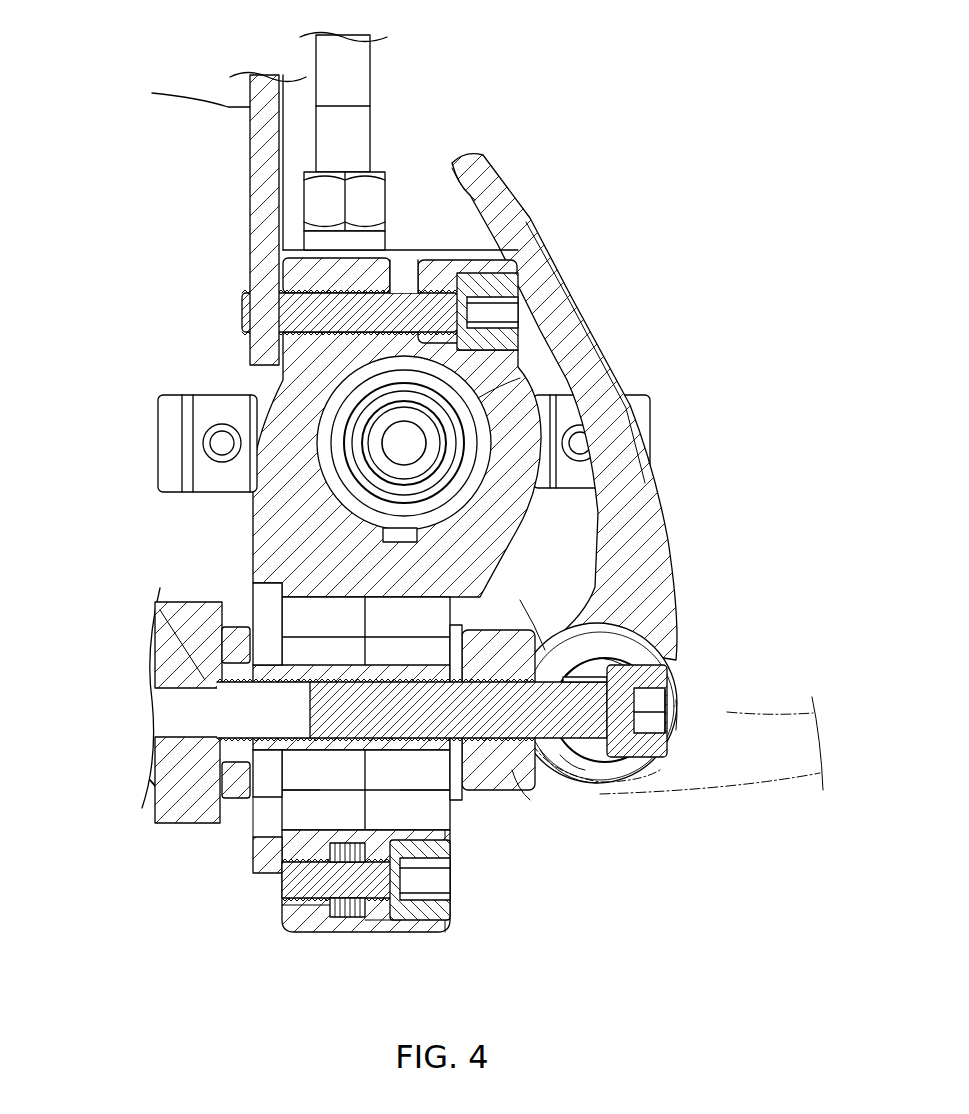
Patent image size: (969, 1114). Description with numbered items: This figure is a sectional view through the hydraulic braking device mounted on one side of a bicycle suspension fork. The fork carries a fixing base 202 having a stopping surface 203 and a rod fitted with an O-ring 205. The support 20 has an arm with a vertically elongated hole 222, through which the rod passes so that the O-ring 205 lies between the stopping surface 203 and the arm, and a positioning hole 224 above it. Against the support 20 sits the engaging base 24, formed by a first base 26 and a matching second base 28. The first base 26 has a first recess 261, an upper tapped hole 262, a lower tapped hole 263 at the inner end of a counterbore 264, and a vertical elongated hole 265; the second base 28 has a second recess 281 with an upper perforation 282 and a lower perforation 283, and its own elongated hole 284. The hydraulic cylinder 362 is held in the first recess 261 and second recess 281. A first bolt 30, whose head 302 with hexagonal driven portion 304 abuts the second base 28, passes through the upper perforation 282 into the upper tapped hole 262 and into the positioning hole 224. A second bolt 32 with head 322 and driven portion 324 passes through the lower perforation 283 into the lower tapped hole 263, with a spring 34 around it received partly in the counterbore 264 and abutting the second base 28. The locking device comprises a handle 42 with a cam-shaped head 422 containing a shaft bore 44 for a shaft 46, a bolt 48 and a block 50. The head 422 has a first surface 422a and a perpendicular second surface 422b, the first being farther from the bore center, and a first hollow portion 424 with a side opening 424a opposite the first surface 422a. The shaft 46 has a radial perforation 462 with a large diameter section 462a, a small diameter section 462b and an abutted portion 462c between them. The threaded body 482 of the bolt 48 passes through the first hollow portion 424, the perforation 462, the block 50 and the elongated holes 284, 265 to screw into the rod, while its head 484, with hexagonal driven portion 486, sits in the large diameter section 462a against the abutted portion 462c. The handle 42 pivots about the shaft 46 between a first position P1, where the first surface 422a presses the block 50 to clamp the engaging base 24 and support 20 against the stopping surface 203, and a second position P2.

The support 20 is at (184, 446).
The engaging base 24 is at (430, 240).
The first base 26 is at (297, 931).
The second base 28 is at (443, 928).
The first bolt 30 is at (398, 272).
The second bolt 32 is at (300, 884).
The spring 34 is at (337, 917).
The handle 42 is at (643, 552).
The shaft bore 44 is at (588, 767).
The shaft 46 is at (583, 670).
The bolt 48 is at (547, 712).
The block 50 is at (512, 640).
The fixing base 202 is at (160, 600).
The stopping surface 203 is at (173, 610).
The O-ring 205 is at (237, 630).
The elongated hole 222 is at (250, 827).
The positioning hole 224 is at (290, 293).
The first recess 261 is at (313, 393).
The upper tapped hole 262 is at (279, 262).
The lower tapped hole 263 is at (290, 903).
The counterbore 264 is at (345, 917).
The elongated hole 265 is at (297, 805).
The second recess 281 is at (495, 395).
The upper perforation 282 is at (440, 280).
The lower perforation 283 is at (372, 917).
The elongated hole 284 is at (420, 810).
The head 302 is at (492, 283).
The driven portion 304 is at (495, 310).
The head 322 is at (437, 852).
The driven portion 324 is at (427, 882).
The hydraulic cylinder 362 is at (317, 450).
The head 422 is at (550, 645).
The first surface 422a is at (512, 772).
The second surface 422b is at (572, 762).
The first hollow portion 424 is at (660, 658).
The side opening 424a is at (678, 716).
The perforation 462 is at (777, 588).
The large diameter section 462a is at (648, 660).
The small diameter section 462b is at (605, 643).
The abutted portion 462c is at (617, 758).
The threaded body 482 is at (337, 713).
The head 484 is at (658, 680).
The driven portion 486 is at (660, 726).
The first position P1 is at (670, 505).
The second position P2 is at (808, 797).